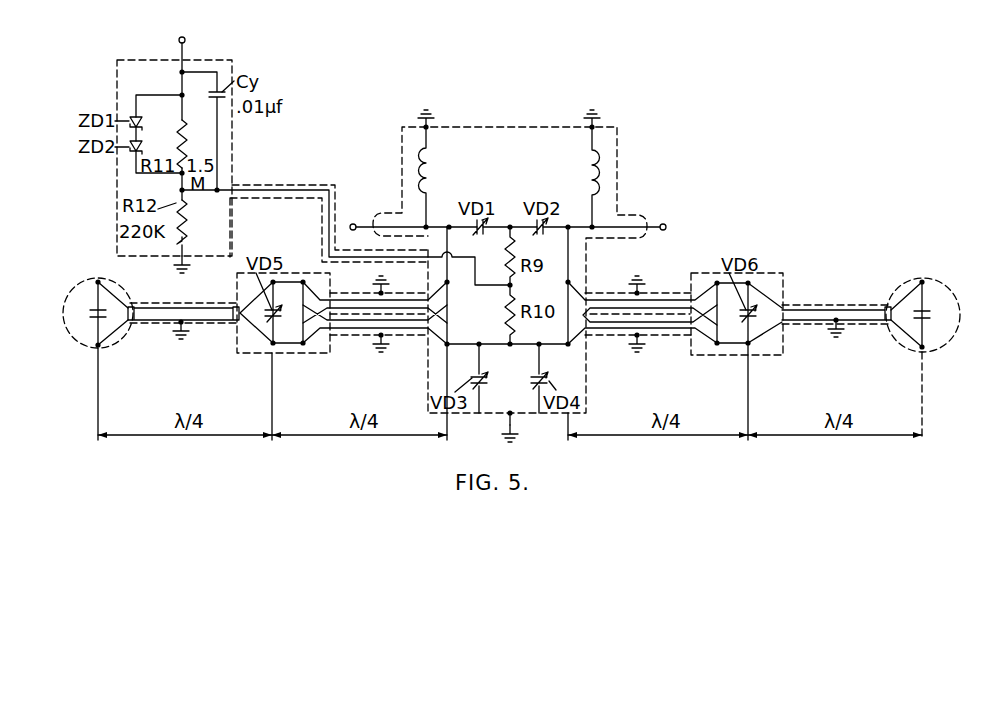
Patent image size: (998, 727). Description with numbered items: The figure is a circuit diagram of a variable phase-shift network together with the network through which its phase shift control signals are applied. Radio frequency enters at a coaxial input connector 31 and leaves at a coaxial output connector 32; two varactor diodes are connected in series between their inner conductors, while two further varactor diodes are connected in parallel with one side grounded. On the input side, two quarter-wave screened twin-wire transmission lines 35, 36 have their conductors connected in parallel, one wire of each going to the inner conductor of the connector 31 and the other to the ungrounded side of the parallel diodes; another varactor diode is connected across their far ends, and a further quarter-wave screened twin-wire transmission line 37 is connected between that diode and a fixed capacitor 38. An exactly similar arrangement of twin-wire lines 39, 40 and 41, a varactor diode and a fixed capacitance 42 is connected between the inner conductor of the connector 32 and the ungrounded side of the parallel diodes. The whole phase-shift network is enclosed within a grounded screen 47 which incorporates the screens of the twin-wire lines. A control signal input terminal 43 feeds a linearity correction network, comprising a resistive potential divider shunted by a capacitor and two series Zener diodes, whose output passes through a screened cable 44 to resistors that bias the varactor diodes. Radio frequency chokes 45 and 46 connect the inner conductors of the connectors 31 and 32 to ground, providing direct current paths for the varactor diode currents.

The coaxial radio frequency input connector 31 is at (353, 216).
The coaxial radio frequency output connector 32 is at (667, 217).
The twin-wire transmission line 35 is at (355, 293).
The twin-wire transmission line 36 is at (359, 335).
The screened twin-wire transmission line 37 is at (176, 305).
The fixed capacitor 38 is at (72, 322).
The twin-wire line 39 is at (620, 293).
The twin-wire line 40 is at (620, 337).
The twin-wire line 41 is at (823, 307).
The fixed capacitance 42 is at (930, 310).
The control signal input terminal 43 is at (186, 41).
The screened cable 44 is at (275, 190).
The radio frequency choke 45 is at (429, 183).
The radio frequency choke 46 is at (588, 181).
The grounded screen 47 is at (518, 126).